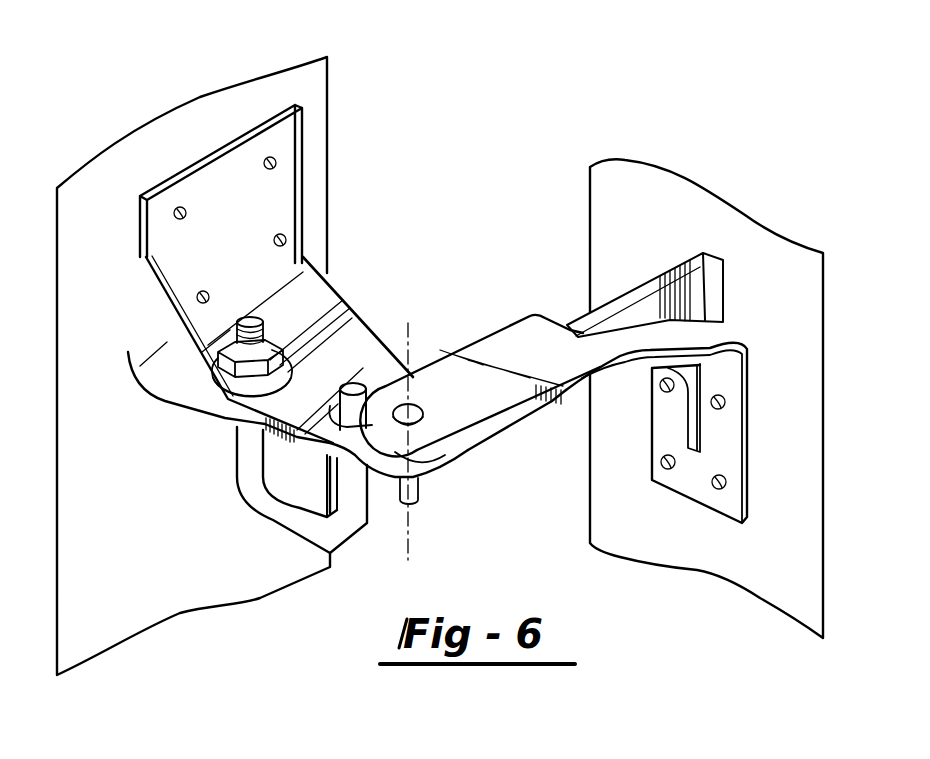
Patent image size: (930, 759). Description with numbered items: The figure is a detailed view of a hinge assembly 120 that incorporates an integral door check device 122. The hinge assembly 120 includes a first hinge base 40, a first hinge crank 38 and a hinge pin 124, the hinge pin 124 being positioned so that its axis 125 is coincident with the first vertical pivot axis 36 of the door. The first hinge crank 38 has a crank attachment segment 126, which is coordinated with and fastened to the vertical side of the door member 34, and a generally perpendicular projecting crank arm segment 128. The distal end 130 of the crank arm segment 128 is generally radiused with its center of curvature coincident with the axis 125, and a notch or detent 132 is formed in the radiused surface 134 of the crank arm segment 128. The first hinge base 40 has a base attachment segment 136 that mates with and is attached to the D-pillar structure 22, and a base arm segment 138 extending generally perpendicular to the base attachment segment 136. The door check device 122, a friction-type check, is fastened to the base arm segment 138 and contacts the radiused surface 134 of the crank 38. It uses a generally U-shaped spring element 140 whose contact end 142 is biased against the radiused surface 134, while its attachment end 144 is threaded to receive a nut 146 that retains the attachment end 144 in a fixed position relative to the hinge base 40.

The D-pillar structure 22 is at (290, 87).
The door member 34 is at (680, 205).
The first vertical pivot axis 36 is at (410, 513).
The first hinge crank 38 is at (703, 337).
The first hinge base 40 is at (131, 360).
The hinge assembly 120 is at (440, 242).
The door check device 122 is at (237, 487).
The hinge pin 124 is at (413, 407).
The axis 125 is at (405, 500).
The crank attachment segment 126 is at (690, 473).
The crank arm segment 128 is at (527, 340).
The distal end 130 is at (423, 430).
The notch or detent 132 is at (330, 457).
The radiused surface 134 is at (417, 455).
The base attachment segment 136 is at (237, 177).
The base arm segment 138 is at (345, 340).
The U-shaped spring element 140 is at (277, 507).
The contact end 142 is at (360, 403).
The attachment end 144 is at (242, 322).
The nut 146 is at (267, 340).